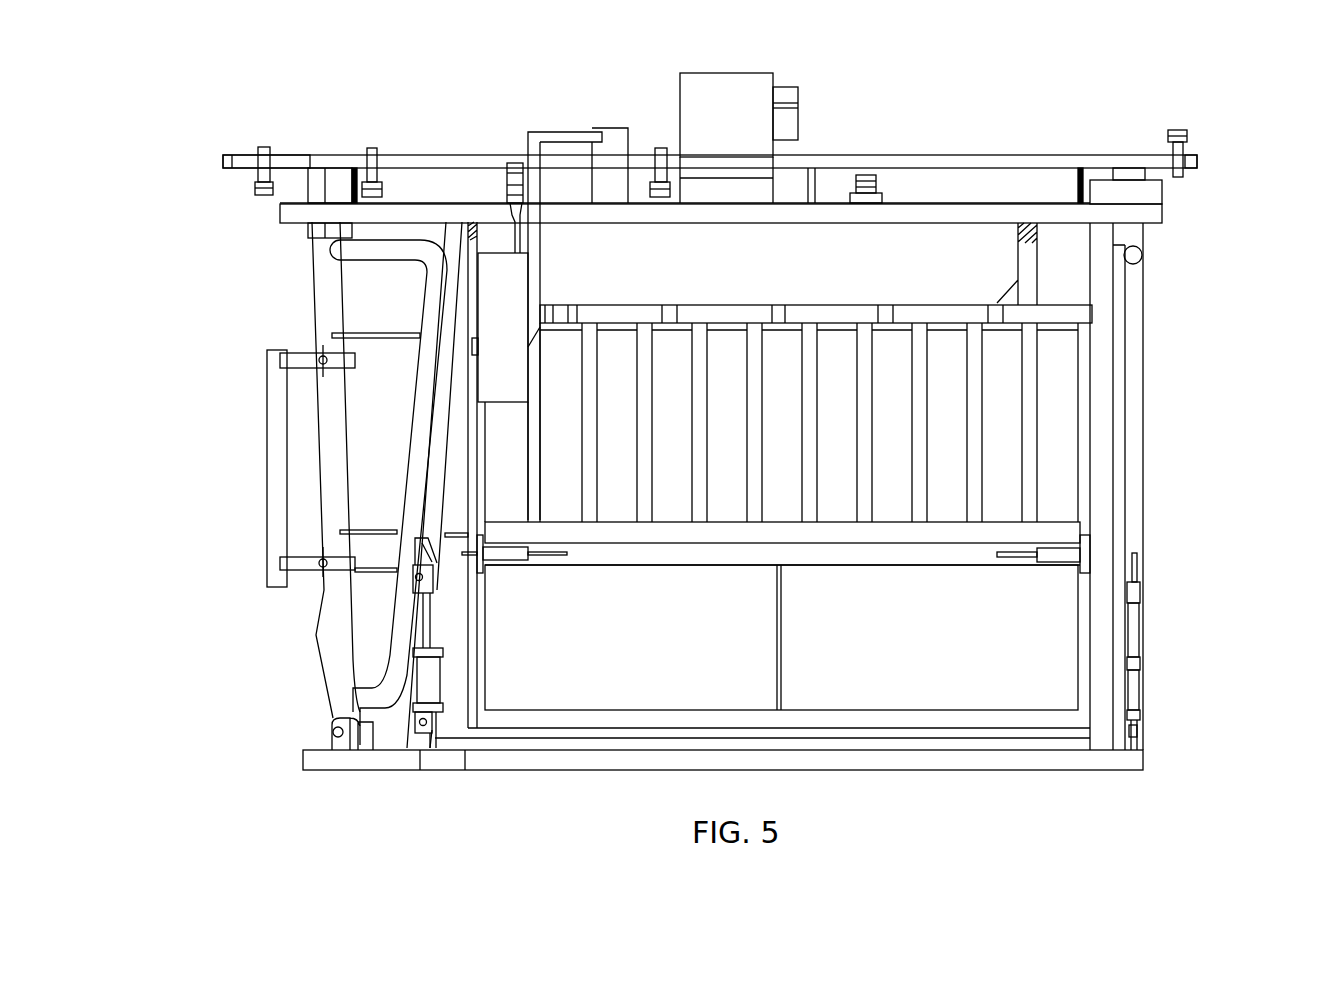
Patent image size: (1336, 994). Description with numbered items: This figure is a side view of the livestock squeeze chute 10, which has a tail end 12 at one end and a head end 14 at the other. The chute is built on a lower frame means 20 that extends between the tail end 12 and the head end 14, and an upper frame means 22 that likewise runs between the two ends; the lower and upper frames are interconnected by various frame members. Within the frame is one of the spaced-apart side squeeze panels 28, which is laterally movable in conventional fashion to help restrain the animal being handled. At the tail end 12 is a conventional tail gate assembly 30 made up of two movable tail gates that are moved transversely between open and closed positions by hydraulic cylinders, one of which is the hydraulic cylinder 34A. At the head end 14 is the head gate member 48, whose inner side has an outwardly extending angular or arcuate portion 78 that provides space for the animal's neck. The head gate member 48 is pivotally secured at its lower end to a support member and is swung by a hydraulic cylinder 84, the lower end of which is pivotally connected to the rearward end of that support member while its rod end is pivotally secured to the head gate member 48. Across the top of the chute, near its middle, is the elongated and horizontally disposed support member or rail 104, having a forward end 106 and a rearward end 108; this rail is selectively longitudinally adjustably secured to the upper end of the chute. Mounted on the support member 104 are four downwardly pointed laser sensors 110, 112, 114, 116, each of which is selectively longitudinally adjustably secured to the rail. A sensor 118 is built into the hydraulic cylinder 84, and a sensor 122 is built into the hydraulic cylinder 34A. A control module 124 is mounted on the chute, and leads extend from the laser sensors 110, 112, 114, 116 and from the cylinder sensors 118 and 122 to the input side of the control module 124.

The livestock squeeze chute 10 is at (927, 107).
The tail end 12 is at (1183, 323).
The head end 14 is at (278, 288).
The lower frame means 20 is at (972, 763).
The upper frame means 22 is at (1000, 203).
The side squeeze panel 28 is at (883, 651).
The tail gate assembly 30 is at (1150, 507).
The hydraulic cylinder 34A is at (1135, 687).
The head gate member 48 is at (397, 248).
The arcuate portion 78 is at (275, 465).
The hydraulic cylinder 84 is at (435, 673).
The support member 104 is at (405, 148).
The forward end 106 is at (230, 162).
The rearward end 108 is at (1197, 160).
The laser sensor 110 is at (255, 190).
The laser sensor 112 is at (372, 148).
The laser sensor 114 is at (660, 173).
The laser sensor 116 is at (1182, 130).
The sensor 118 is at (443, 715).
The sensor 122 is at (1132, 717).
The control module 124 is at (493, 320).